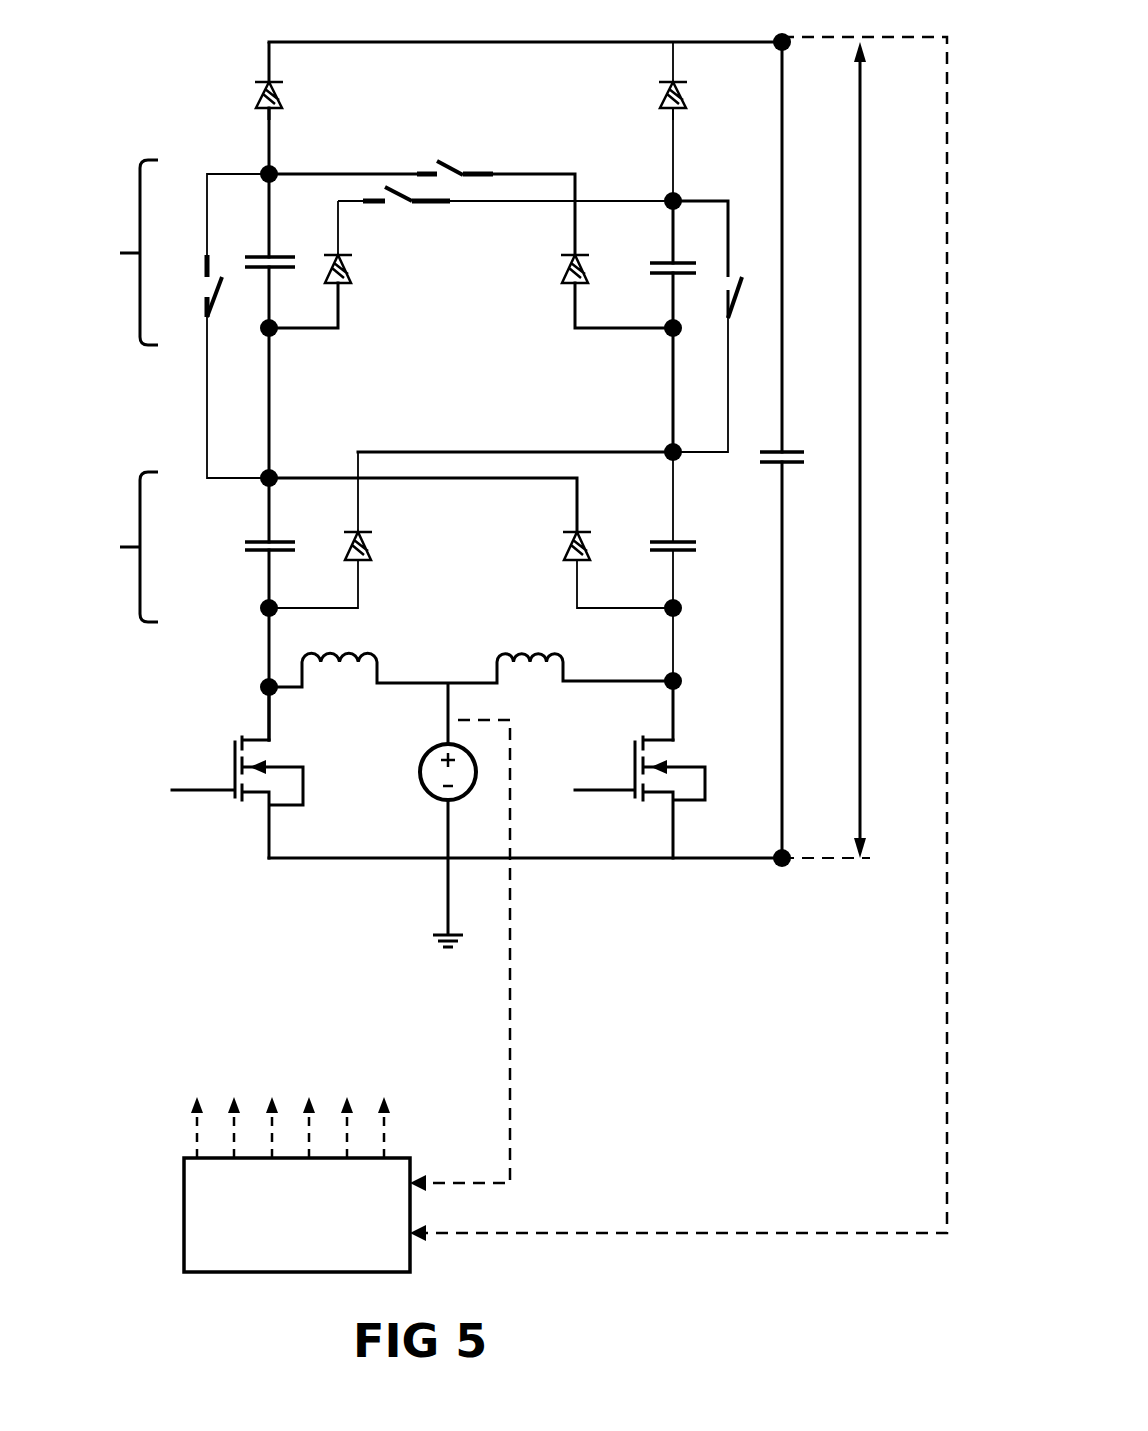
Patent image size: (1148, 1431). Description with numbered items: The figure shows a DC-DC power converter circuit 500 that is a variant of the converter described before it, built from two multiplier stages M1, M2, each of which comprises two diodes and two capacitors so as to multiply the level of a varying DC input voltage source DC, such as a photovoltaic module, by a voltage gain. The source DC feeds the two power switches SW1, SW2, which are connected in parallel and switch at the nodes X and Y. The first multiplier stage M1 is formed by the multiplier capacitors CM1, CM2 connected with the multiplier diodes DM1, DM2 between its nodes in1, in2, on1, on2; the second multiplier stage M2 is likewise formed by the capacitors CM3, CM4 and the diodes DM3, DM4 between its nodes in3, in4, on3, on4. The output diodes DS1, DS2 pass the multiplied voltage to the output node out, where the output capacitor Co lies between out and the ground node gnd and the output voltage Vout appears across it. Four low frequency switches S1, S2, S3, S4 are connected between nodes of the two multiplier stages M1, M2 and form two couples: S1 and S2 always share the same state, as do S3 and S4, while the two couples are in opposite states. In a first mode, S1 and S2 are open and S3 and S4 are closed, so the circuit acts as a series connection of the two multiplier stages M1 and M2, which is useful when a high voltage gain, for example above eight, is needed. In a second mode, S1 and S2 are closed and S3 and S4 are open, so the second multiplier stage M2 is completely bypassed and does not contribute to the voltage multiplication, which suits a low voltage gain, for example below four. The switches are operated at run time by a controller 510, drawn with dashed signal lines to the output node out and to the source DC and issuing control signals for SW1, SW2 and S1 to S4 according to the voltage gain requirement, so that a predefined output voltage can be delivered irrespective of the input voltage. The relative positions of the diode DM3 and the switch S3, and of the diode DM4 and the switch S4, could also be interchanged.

The switched-capacitor power converter system 500 is at (128, 1262).
The controller 510 is at (195, 1183).
The output diode DS1 is at (298, 81).
The output diode DS2 is at (701, 81).
The multiplier diode DM1 is at (388, 548).
The multiplier diode DM2 is at (549, 547).
The diode DM3 is at (368, 269).
The diode DM4 is at (545, 270).
The multiplier capacitor CM1 is at (244, 550).
The multiplier capacitor CM2 is at (700, 550).
The module capacitor CM3 is at (258, 248).
The module capacitor CM4 is at (657, 254).
The output capacitor Co is at (795, 481).
The switch S1 is at (215, 326).
The switch S2 is at (723, 326).
The switch S3 is at (406, 211).
The switch S4 is at (455, 152).
The power switch SW1 is at (237, 797).
The power switch SW2 is at (640, 797).
The DC input voltage source DC is at (429, 815).
The first multiplier stage M1 is at (104, 547).
The second multiplier stage M2 is at (104, 252).
The output voltage Vout is at (882, 450).
The output node out is at (806, 25).
The ground node gnd is at (821, 877).
The node on1 is at (296, 461).
The node on2 is at (642, 438).
The node on3 is at (297, 160).
The node on4 is at (642, 184).
The node in1 is at (248, 623).
The node in2 is at (699, 621).
The node in3 is at (292, 344).
The node in4 is at (646, 342).
The node X is at (250, 695).
The node Y is at (686, 691).